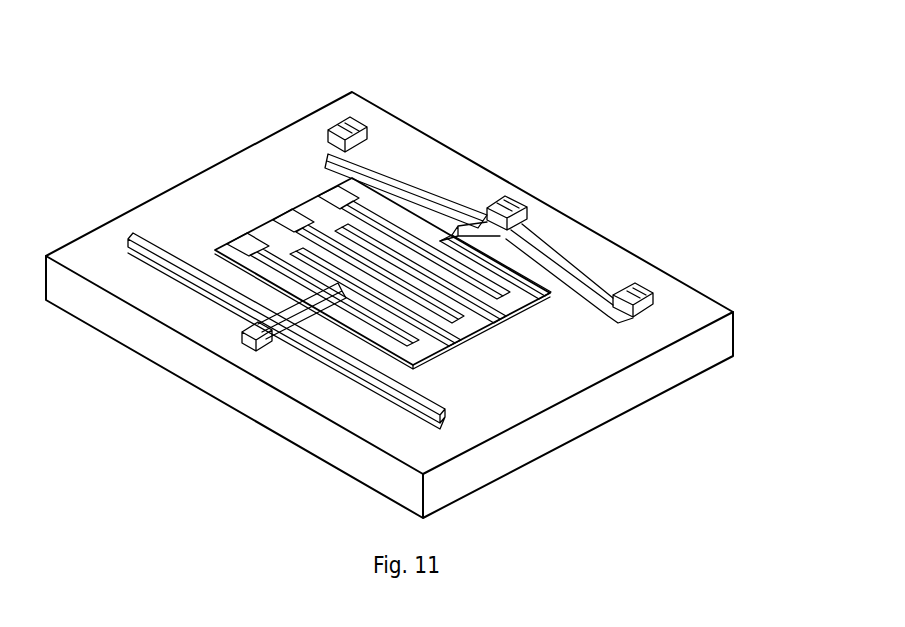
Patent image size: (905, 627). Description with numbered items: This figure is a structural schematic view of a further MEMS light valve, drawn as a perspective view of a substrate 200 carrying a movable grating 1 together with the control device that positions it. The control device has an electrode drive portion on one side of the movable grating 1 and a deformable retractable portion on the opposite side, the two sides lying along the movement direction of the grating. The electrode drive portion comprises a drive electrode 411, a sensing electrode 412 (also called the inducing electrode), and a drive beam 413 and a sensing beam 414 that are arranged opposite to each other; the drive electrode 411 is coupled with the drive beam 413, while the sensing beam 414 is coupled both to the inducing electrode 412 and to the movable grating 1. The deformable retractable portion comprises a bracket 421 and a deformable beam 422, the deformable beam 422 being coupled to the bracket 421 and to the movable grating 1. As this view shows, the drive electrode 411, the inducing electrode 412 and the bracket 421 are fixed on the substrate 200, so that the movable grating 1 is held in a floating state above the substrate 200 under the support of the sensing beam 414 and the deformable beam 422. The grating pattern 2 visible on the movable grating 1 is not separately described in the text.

The substrate 200 is at (717, 352).
The movable grating 1 is at (273, 220).
The interdigitated electrode pattern 2 is at (498, 322).
The drive electrode 411 is at (503, 198).
The sensing electrode 412 is at (332, 128).
The drive beam 413 is at (540, 252).
The sensing beam 414 is at (597, 305).
The bracket 421 is at (243, 335).
The deformable beam 422 is at (447, 422).